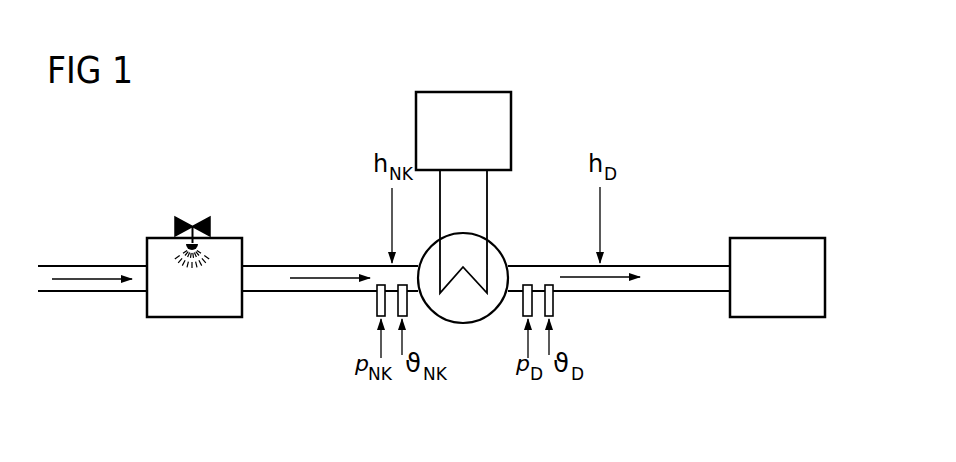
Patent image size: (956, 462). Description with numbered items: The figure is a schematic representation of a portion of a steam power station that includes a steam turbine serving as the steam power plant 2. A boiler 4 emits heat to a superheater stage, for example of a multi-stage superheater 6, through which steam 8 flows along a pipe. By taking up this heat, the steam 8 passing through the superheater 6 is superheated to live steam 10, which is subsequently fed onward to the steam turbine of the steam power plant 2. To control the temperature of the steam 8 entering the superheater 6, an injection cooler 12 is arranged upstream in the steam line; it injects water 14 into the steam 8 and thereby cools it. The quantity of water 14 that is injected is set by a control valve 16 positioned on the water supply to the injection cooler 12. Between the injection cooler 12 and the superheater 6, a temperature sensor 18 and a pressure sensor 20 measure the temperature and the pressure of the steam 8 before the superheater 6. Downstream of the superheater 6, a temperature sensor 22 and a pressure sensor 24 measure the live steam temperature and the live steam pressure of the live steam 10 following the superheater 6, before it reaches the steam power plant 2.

The steam power plant 2 is at (782, 306).
The boiler 4 is at (462, 90).
The superheater 6 is at (502, 250).
The steam 8 is at (88, 278).
The live steam 10 is at (613, 276).
The injection cooler 12 is at (193, 306).
The water 14 is at (178, 254).
The control valve 16 is at (197, 216).
The temperature sensor 18 is at (407, 303).
The pressure sensor 20 is at (376, 303).
The temperature sensor 22 is at (523, 303).
The pressure sensor 24 is at (555, 303).